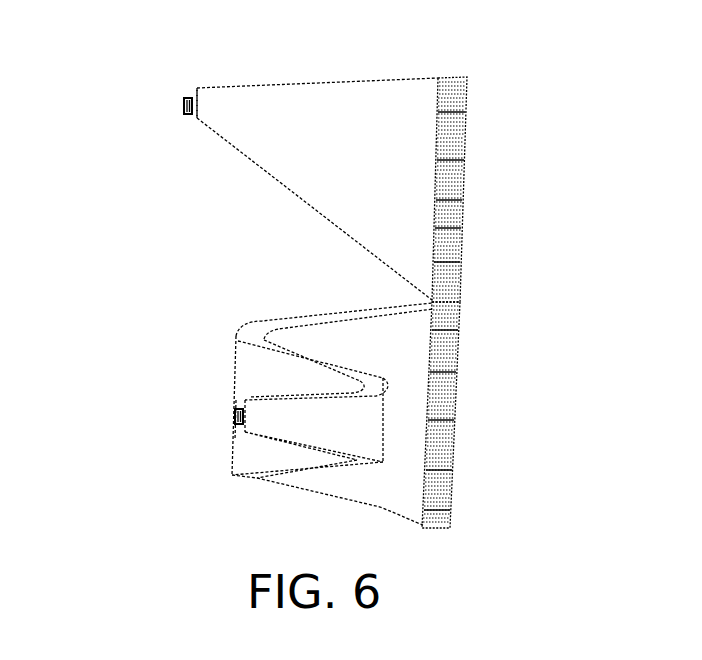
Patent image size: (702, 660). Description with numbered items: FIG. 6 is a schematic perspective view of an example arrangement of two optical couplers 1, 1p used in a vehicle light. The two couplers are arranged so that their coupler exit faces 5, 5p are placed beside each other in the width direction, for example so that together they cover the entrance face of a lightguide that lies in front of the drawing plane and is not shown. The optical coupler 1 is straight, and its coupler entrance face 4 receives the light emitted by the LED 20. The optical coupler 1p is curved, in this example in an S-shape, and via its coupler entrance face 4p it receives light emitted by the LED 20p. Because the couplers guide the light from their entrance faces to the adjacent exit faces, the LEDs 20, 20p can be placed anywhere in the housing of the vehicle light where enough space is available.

The optical coupler 1 is at (268, 105).
The optical coupler 1p is at (335, 318).
The coupler entrance face 4 is at (193, 118).
The coupler entrance face 4p is at (233, 430).
The coupler exit face 5 is at (460, 208).
The coupler exit face 5p is at (453, 455).
The LED 20 is at (182, 107).
The LED 20p is at (233, 420).